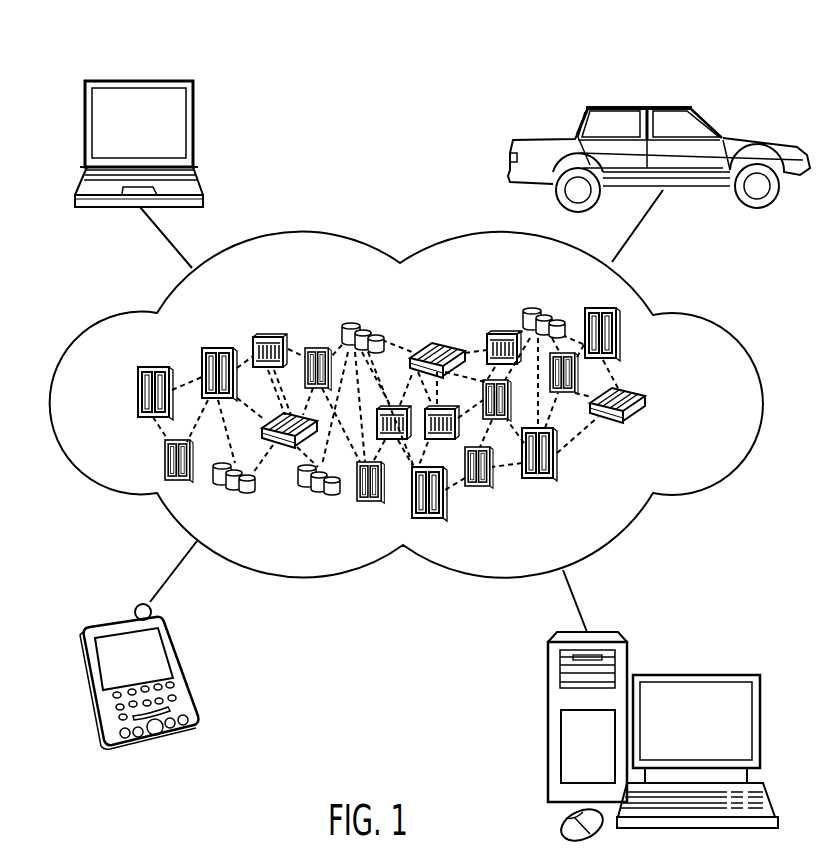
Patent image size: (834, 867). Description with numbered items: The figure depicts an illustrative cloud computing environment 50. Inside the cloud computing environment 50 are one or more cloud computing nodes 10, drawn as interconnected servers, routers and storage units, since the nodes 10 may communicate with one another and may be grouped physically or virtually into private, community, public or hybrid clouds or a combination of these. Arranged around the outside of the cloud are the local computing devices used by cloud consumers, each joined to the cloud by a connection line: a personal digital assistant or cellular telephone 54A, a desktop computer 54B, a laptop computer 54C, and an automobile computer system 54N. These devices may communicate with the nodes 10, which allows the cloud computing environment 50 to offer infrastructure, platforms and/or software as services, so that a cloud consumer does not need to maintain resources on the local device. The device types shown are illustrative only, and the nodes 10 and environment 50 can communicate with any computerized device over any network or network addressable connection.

The cloud computing node 10 is at (652, 403).
The cloud computing environment 50 is at (406, 405).
The personal digital assistant or cellular telephone 54A is at (120, 617).
The desktop computer 54B is at (697, 673).
The laptop computer 54C is at (138, 80).
The automobile computer system 54N is at (638, 105).